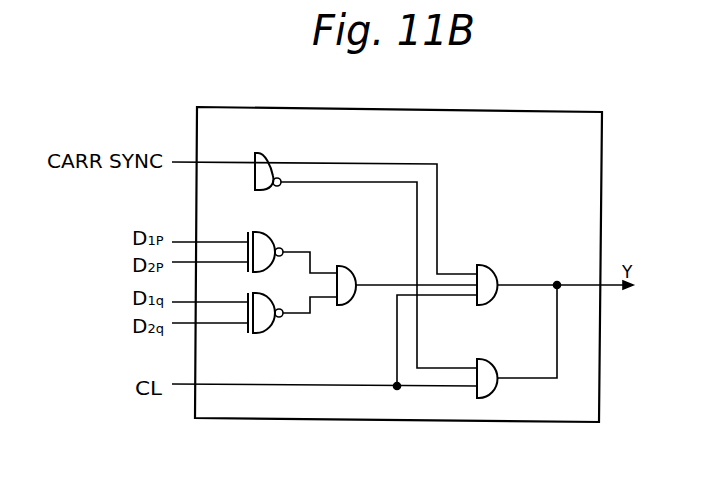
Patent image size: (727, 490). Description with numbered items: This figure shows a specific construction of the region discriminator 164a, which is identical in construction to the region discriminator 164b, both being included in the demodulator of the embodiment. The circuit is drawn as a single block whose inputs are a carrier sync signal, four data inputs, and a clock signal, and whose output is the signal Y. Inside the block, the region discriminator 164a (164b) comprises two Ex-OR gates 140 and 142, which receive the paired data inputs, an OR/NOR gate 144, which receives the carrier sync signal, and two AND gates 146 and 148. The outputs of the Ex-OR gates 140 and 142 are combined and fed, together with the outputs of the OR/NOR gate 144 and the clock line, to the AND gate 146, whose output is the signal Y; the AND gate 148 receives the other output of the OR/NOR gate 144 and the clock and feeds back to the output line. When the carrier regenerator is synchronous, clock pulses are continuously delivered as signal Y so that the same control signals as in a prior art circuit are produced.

The region discriminator 164a is at (436, 243).
The region discriminator 164b is at (601, 112).
The OR/NOR gate 144 is at (266, 157).
The Ex-OR gate 140 is at (273, 243).
The Ex-OR gate 142 is at (265, 330).
The AND gate 146 is at (494, 268).
The AND gate 148 is at (493, 361).